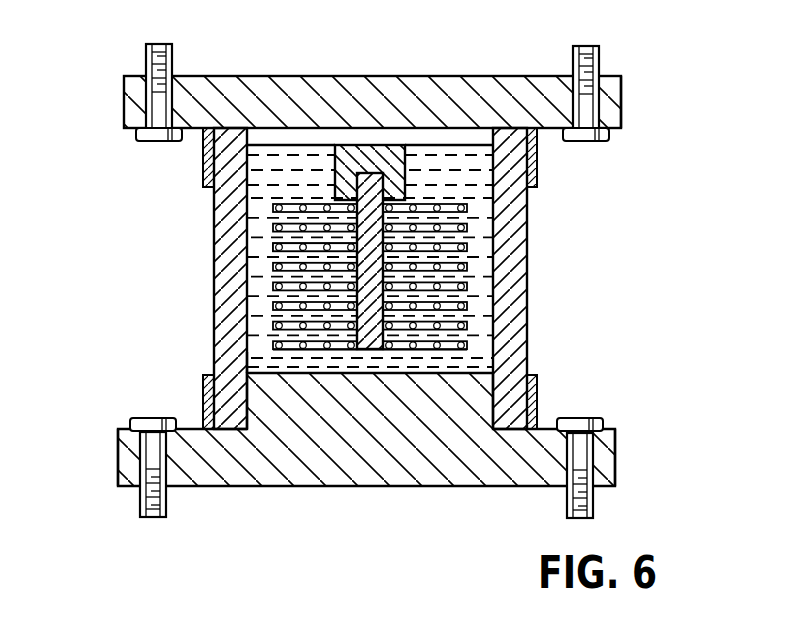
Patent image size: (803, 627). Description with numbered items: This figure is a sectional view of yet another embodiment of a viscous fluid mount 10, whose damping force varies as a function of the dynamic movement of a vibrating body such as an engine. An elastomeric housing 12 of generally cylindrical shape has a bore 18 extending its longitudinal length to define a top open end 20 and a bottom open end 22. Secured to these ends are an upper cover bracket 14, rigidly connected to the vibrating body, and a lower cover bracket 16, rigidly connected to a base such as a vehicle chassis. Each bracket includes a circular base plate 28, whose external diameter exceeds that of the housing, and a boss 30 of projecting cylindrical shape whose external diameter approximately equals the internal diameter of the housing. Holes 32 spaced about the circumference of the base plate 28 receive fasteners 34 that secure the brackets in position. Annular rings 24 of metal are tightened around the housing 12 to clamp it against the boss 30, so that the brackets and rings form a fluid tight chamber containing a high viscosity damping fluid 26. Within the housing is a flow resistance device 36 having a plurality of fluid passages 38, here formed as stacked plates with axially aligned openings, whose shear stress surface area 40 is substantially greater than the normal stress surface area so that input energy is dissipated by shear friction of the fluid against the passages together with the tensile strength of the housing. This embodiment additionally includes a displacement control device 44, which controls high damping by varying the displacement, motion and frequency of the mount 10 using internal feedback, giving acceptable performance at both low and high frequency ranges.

The viscous fluid mount 10 is at (618, 176).
The elastomeric housing 12 is at (525, 208).
The upper cover bracket 14 is at (468, 77).
The lower cover bracket 16 is at (270, 472).
The bore 18 is at (470, 205).
The top open end 20 is at (325, 185).
The bottom open end 22 is at (413, 377).
The annular rings 24 is at (538, 176).
The high viscosity damping fluid 26 is at (252, 357).
The circular base plate 28 is at (610, 82).
The boss 30 is at (260, 143).
The holes 32 is at (120, 458).
The fasteners 34 is at (160, 44).
The flow resistance device 36 is at (486, 287).
The fluid passages 38 is at (367, 287).
The shear stress surface area 40 is at (277, 247).
The displacement control device 44 is at (374, 137).